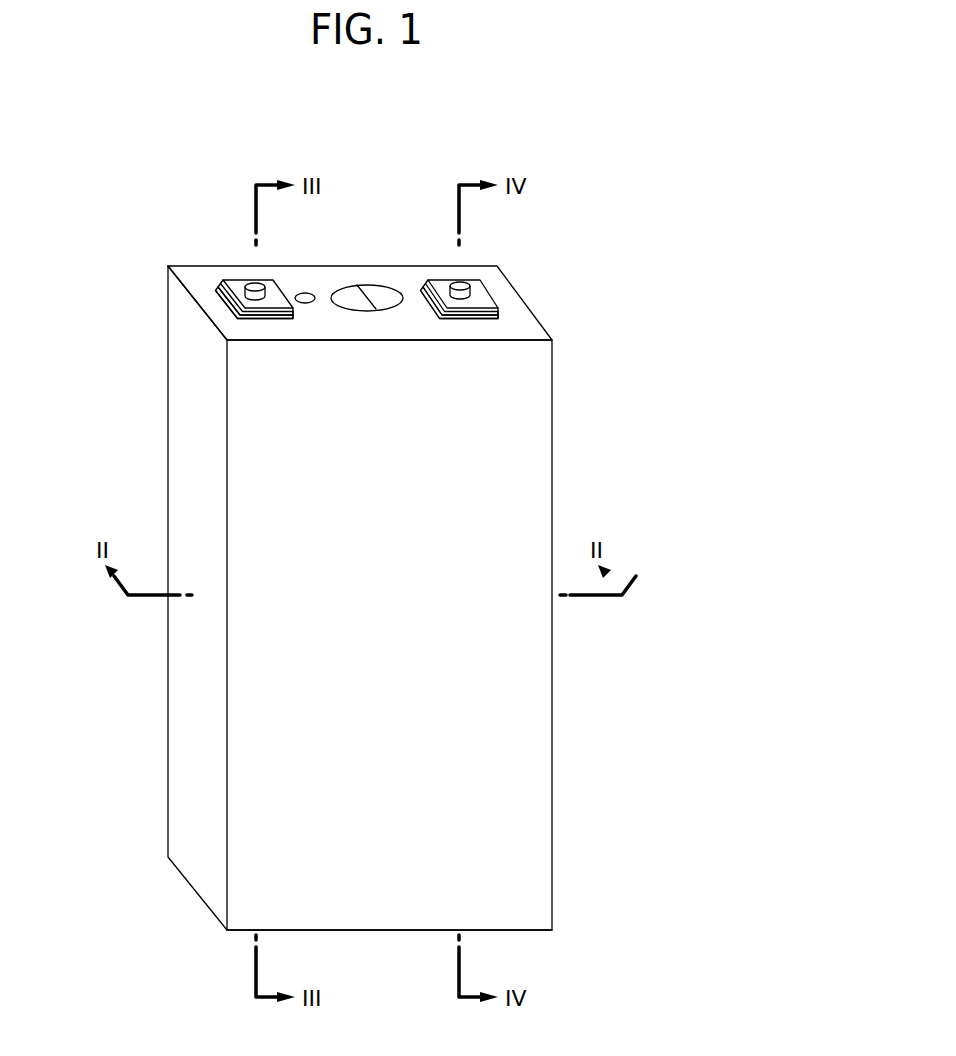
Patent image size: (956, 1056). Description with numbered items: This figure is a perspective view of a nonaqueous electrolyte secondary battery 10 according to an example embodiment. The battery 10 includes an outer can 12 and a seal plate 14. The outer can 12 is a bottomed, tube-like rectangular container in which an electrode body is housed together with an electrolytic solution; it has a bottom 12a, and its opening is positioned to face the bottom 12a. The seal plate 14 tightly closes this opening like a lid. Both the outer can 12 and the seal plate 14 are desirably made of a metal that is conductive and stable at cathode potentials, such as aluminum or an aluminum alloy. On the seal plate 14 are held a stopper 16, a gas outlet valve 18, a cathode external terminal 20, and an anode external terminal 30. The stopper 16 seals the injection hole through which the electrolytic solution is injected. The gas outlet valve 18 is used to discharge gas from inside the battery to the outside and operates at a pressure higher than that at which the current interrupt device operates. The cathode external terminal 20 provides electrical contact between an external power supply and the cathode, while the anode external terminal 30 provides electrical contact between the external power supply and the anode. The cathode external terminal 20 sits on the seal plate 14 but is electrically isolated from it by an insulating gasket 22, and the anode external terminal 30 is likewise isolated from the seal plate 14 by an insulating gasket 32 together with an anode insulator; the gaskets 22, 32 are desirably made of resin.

The nonaqueous electrolyte secondary battery 10 is at (573, 175).
The outer can 12 is at (188, 488).
The bottom 12a is at (357, 933).
The seal plate 14 is at (197, 276).
The stopper 16 is at (305, 293).
The gas outlet valve 18 is at (377, 296).
The cathode external terminal 20 is at (255, 283).
The insulating gasket 22 is at (230, 302).
The anode external terminal 30 is at (478, 296).
The insulating gasket 32 is at (505, 320).